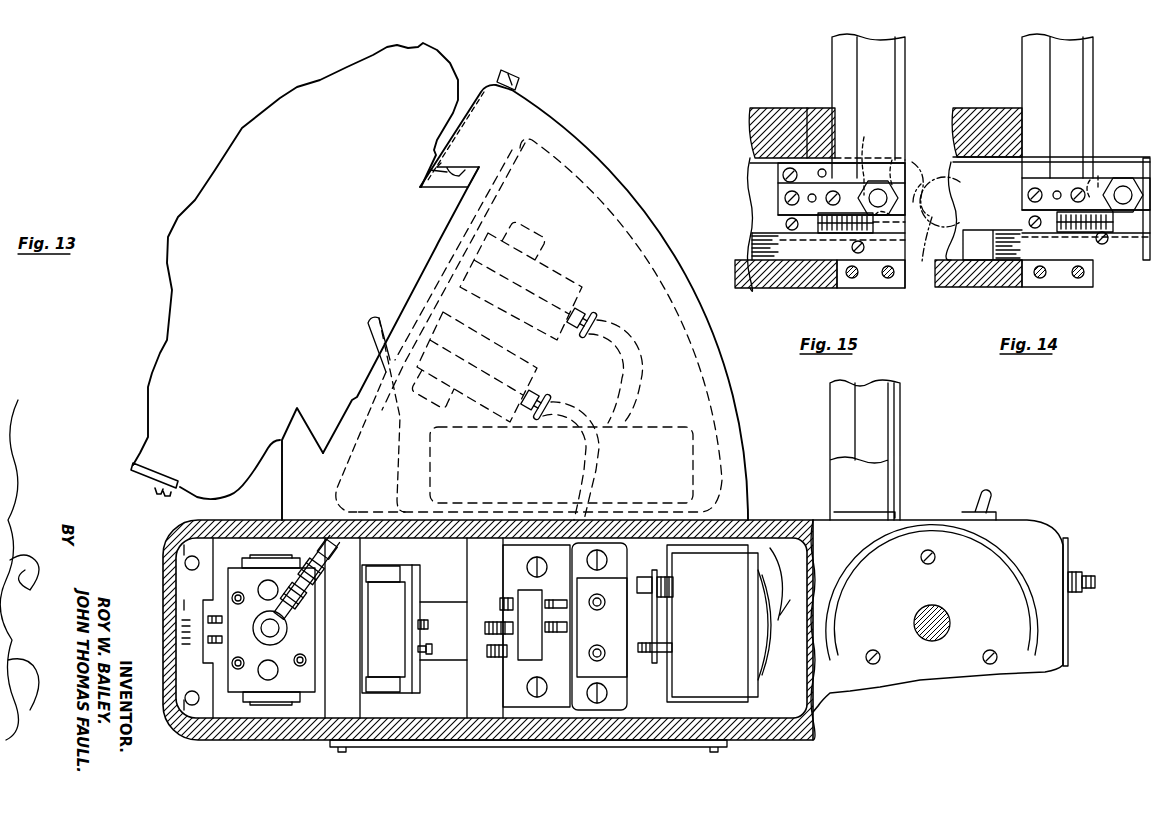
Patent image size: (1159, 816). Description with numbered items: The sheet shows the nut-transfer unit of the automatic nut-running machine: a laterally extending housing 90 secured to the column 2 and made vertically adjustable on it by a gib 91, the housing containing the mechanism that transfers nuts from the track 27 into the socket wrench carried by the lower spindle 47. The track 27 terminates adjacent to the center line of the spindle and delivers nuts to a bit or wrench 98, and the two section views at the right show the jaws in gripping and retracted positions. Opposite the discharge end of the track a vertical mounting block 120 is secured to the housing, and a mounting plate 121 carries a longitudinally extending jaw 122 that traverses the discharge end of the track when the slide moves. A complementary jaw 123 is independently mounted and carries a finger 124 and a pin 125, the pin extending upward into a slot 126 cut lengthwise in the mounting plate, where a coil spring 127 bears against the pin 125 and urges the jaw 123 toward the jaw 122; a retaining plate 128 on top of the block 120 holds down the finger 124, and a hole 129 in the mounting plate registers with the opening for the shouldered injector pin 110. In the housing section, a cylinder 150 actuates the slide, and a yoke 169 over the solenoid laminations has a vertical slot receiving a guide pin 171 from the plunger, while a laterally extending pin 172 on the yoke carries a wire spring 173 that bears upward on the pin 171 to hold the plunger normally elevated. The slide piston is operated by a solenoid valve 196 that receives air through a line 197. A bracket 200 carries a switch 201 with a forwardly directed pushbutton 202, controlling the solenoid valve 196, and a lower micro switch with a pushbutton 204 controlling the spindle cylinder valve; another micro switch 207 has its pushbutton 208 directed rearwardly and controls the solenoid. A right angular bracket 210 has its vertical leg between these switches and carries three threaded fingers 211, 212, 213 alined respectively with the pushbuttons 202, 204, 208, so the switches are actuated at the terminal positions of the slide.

In FIG. 13, the column 2 is at (198, 477).
In FIG. 13, the track 27 is at (886, 417).
In FIG. 14, the track 27 is at (1076, 67).
In FIG. 15, the track 27 is at (887, 76).
In FIG. 13, the lower spindle 47 is at (946, 612).
In FIG. 13, the laterally extending housing 90 is at (265, 522).
In FIG. 14, the laterally extending housing 90 is at (994, 108).
In FIG. 15, the laterally extending housing 90 is at (760, 108).
In FIG. 13, the gib 91 is at (437, 187).
In FIG. 14, the bit or wrench 98 is at (949, 162).
In FIG. 15, the bit or wrench 98 is at (925, 164).
In FIG. 14, the injector pin 110 is at (1123, 186).
In FIG. 15, the injector pin 110 is at (878, 188).
In FIG. 14, the vertical mounting block 120 is at (1080, 286).
In FIG. 15, the vertical mounting block 120 is at (864, 288).
In FIG. 15, the mounting plate 121 is at (807, 162).
In FIG. 14, the longitudinally extending jaw 122 is at (1102, 170).
In FIG. 15, the longitudinally extending jaw 122 is at (778, 183).
In FIG. 14, the complementary jaw 123 is at (1142, 178).
In FIG. 15, the complementary jaw 123 is at (908, 180).
In FIG. 14, the finger 124 is at (1016, 232).
In FIG. 15, the finger 124 is at (758, 236).
In FIG. 14, the pin 125 is at (1052, 240).
In FIG. 15, the pin 125 is at (814, 238).
In FIG. 14, the slot 126 is at (1052, 212).
In FIG. 15, the slot 126 is at (823, 215).
In FIG. 14, the coil spring 127 is at (1110, 224).
In FIG. 15, the coil spring 127 is at (898, 226).
In FIG. 14, the retaining plate 128 is at (956, 248).
In FIG. 15, the retaining plate 128 is at (748, 250).
In FIG. 14, the hole 129 is at (1094, 180).
In FIG. 15, the hole 129 is at (878, 168).
In FIG. 13, the cylinder 150 is at (441, 602).
In FIG. 13, the yoke 169 is at (728, 614).
In FIG. 13, the guide pin 171 is at (661, 658).
In FIG. 13, the laterally extending pin 172 is at (649, 576).
In FIG. 13, the wire spring 173 is at (652, 604).
In FIG. 13, the solenoid valve 196 is at (243, 683).
In FIG. 13, the line 197 is at (382, 488).
In FIG. 13, the bracket 200 is at (328, 597).
In FIG. 13, the switch 201 is at (386, 584).
In FIG. 13, the pushbutton 202 is at (427, 624).
In FIG. 13, the pushbutton 204 is at (431, 646).
In FIG. 13, the micro switch 207 is at (605, 586).
In FIG. 13, the pushbutton 208 is at (566, 632).
In FIG. 13, the right angular bracket 210 is at (530, 602).
In FIG. 13, the threaded finger or screw 211 is at (486, 628).
In FIG. 13, the threaded finger or screw 212 is at (494, 660).
In FIG. 13, the threaded finger or screw 213 is at (500, 600).